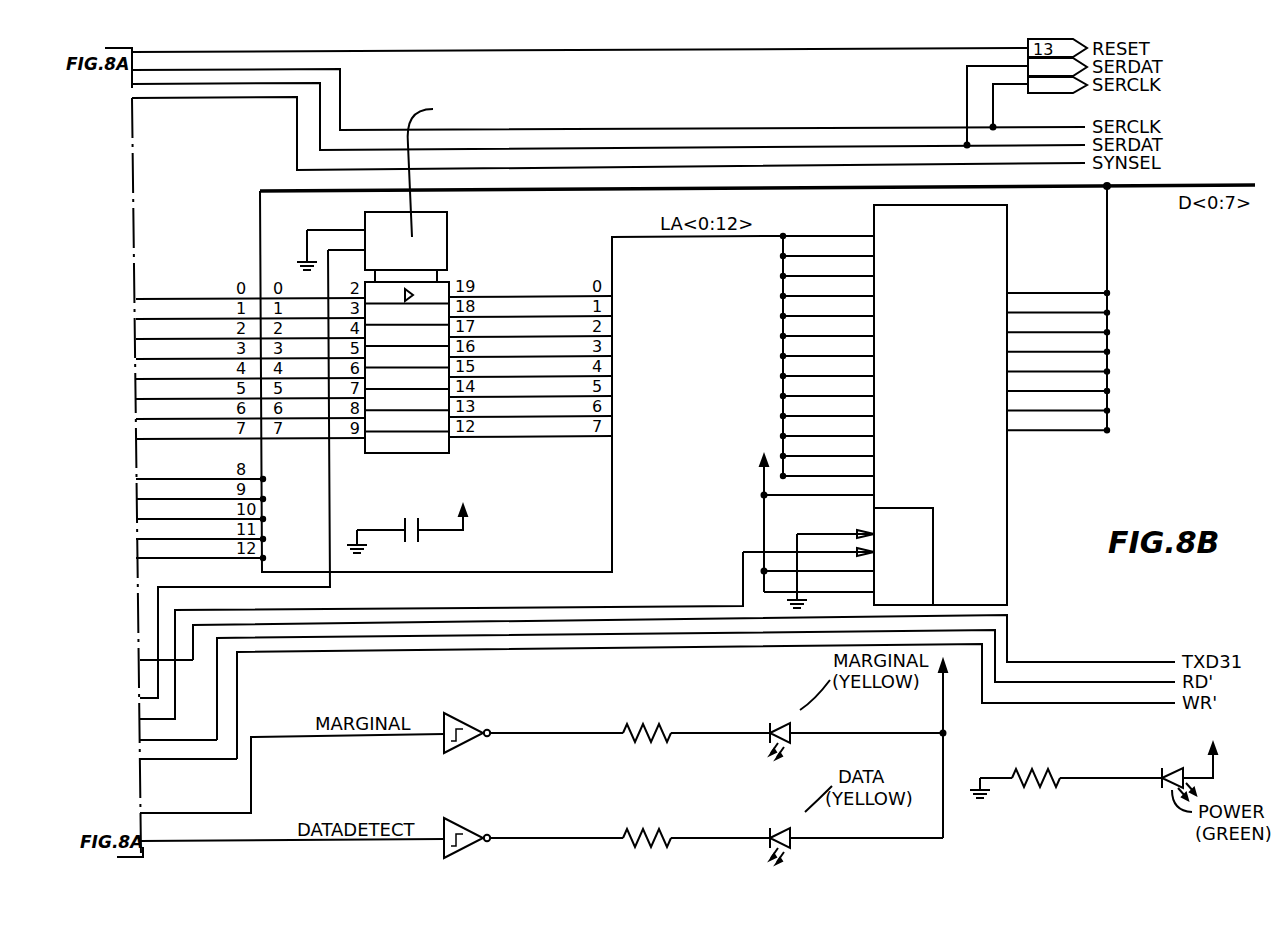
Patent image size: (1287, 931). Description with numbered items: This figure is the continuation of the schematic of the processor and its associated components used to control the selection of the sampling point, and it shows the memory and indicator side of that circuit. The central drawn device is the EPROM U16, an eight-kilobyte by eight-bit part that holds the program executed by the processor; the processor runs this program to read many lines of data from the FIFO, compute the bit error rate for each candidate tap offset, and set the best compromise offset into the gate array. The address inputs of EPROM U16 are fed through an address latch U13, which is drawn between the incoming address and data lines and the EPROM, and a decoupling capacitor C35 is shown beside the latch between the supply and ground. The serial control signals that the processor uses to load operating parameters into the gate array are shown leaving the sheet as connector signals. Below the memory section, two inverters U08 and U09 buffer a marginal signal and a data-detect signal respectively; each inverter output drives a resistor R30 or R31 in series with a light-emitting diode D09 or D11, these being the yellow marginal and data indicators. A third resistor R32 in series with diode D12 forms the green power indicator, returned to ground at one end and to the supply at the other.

The address latch 74HC573 U13 is at (442, 278).
The EPROM U16 is at (926, 406).
The capacitor 0.1uF C35 is at (407, 515).
The inverter 74HCT14 (marginal) U08 is at (474, 713).
The inverter 74HCT14 (data detect) U09 is at (474, 818).
The resistor 470 ohm R30 is at (650, 707).
The resistor 470 ohm R31 is at (650, 812).
The resistor 470 ohm R32 is at (1025, 764).
The marginal LED (yellow) D09 is at (777, 716).
The data LED (yellow) D11 is at (777, 821).
The power LED (green) D12 is at (1178, 765).